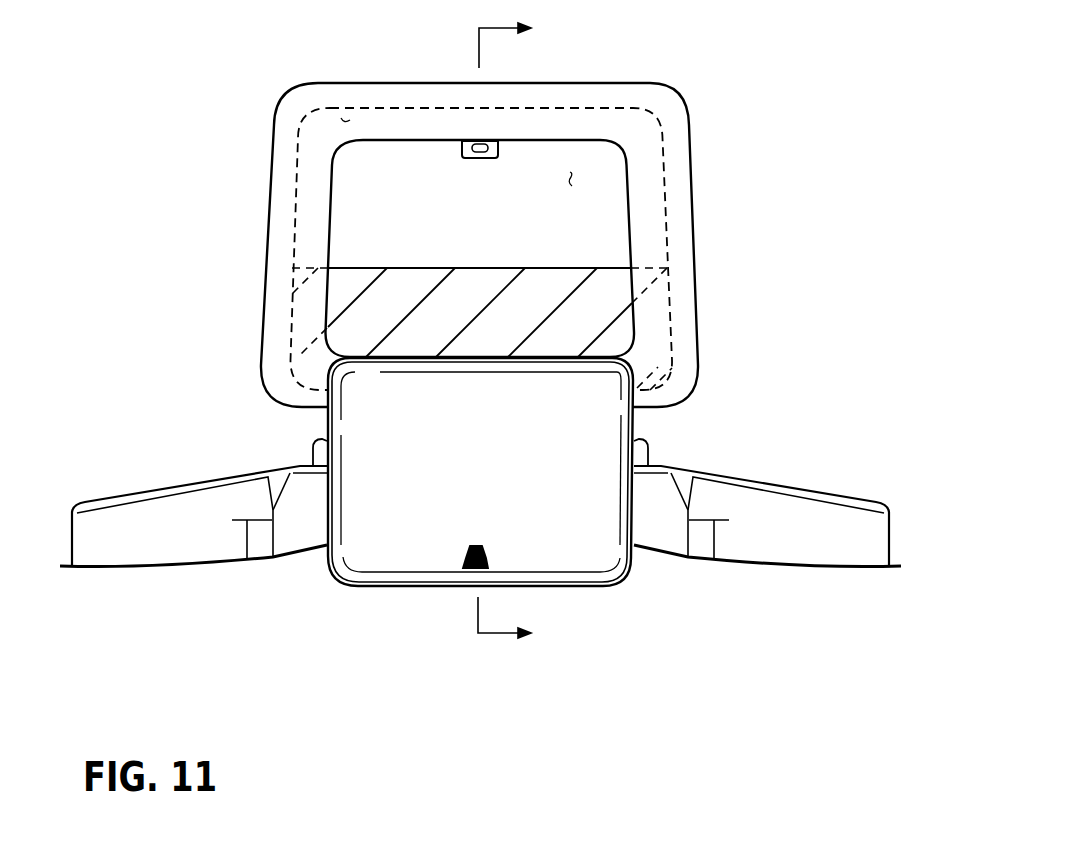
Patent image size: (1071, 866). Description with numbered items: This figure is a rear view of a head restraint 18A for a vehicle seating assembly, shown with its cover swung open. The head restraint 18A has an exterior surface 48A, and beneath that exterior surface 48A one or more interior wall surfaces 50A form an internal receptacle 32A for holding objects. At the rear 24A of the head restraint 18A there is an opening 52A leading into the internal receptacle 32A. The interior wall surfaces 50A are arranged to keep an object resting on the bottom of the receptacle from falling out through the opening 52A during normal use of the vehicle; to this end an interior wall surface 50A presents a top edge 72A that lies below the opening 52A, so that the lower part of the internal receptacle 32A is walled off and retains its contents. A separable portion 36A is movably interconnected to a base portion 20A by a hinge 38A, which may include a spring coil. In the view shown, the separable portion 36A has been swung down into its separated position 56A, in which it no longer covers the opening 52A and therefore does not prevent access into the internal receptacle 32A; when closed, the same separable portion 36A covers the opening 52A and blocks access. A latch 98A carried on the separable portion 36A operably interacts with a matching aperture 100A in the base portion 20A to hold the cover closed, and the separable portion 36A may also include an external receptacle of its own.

The head restraint 18A is at (480, 343).
The base portion 20A is at (262, 257).
The rear 24A is at (643, 158).
The internal receptacle 32A is at (670, 247).
The separable portion 36A is at (554, 510).
The hinge 38A is at (590, 357).
The exterior surface 48A is at (346, 118).
The interior wall surfaces 50A is at (572, 186).
The opening 52A is at (590, 228).
The separated position 56A is at (500, 521).
The top edge 72A is at (437, 268).
The latch 98A is at (493, 558).
The aperture 100A is at (480, 141).